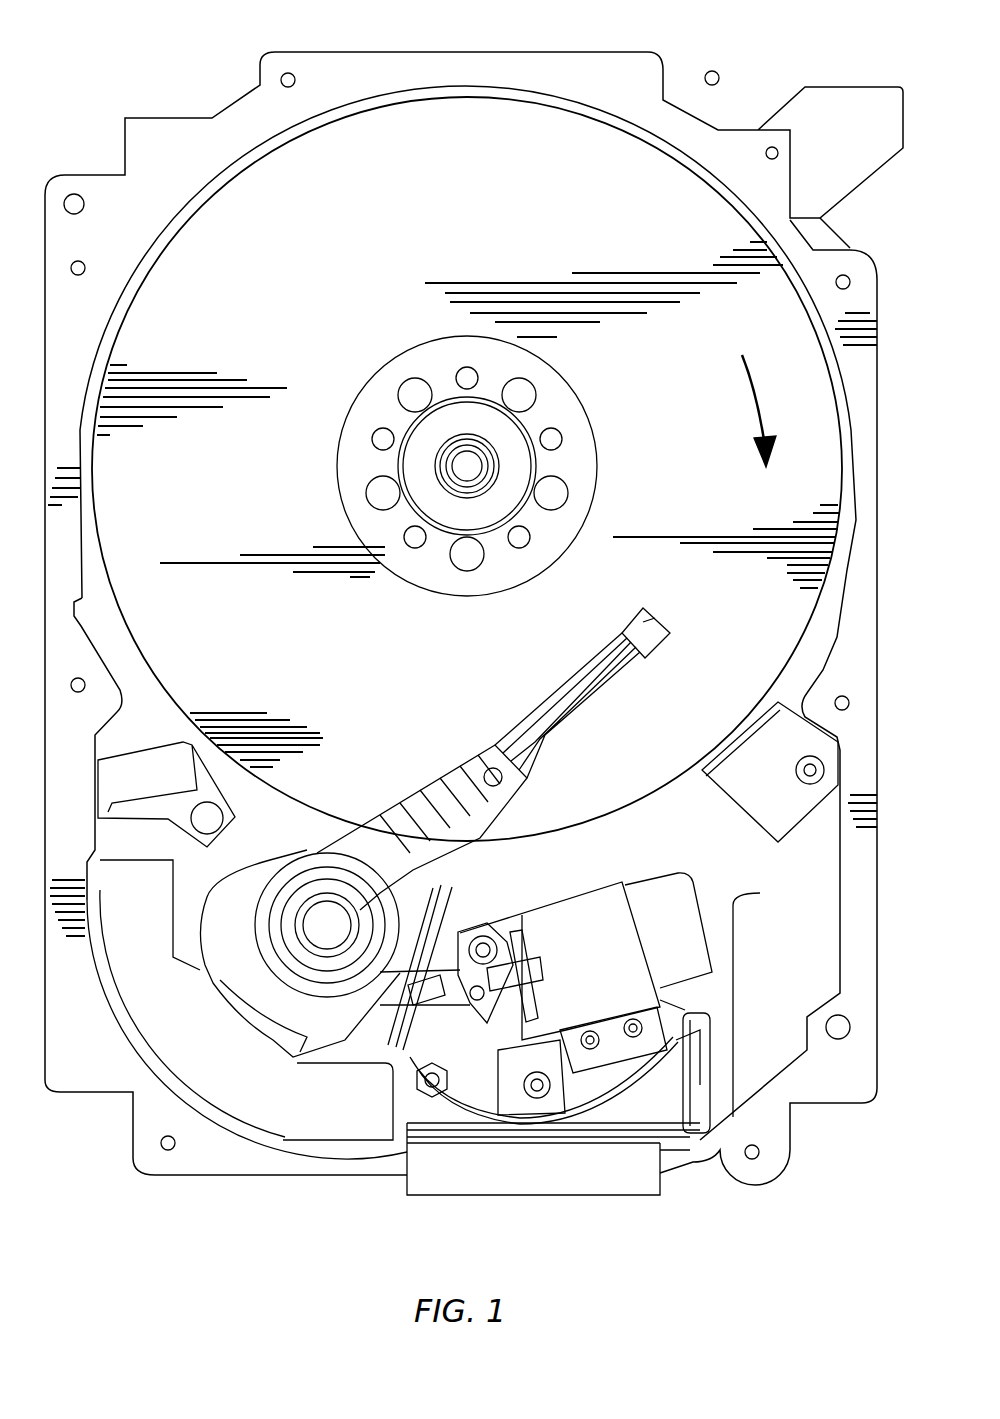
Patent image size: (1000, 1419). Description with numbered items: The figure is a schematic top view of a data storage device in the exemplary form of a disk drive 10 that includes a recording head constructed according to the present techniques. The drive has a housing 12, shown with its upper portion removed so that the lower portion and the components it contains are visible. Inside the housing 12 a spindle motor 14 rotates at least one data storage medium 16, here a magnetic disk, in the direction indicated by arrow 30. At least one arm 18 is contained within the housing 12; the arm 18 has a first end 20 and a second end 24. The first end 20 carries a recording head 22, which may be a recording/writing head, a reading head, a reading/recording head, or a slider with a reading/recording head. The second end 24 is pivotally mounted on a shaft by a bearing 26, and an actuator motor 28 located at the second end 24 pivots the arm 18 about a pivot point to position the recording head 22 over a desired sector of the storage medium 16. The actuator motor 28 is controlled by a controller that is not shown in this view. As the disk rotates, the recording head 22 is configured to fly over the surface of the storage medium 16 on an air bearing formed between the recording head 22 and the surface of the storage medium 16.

The disk drive 10 is at (104, 108).
The housing 12 is at (612, 62).
The spindle motor 14 is at (462, 470).
The data storage medium 16 is at (370, 242).
The arm 18 is at (455, 782).
The first end 20 is at (608, 672).
The recording head 22 is at (660, 615).
The second end 24 is at (355, 855).
The bearing 26 is at (313, 905).
The actuator motor 28 is at (207, 1054).
The arrow 30 is at (755, 405).